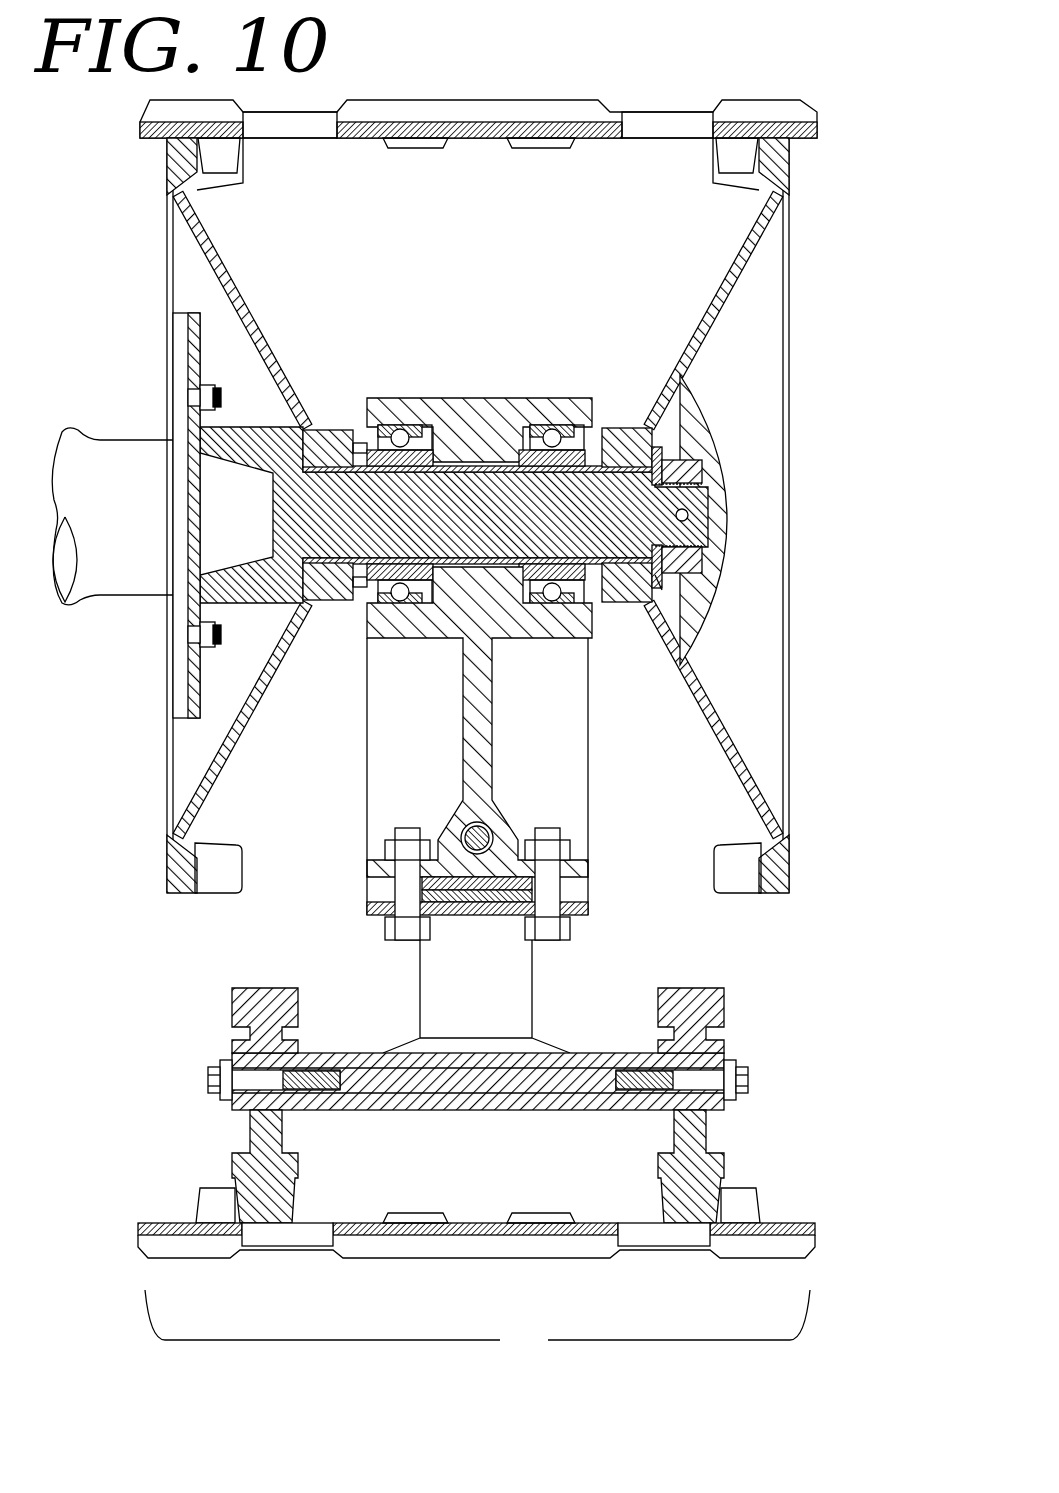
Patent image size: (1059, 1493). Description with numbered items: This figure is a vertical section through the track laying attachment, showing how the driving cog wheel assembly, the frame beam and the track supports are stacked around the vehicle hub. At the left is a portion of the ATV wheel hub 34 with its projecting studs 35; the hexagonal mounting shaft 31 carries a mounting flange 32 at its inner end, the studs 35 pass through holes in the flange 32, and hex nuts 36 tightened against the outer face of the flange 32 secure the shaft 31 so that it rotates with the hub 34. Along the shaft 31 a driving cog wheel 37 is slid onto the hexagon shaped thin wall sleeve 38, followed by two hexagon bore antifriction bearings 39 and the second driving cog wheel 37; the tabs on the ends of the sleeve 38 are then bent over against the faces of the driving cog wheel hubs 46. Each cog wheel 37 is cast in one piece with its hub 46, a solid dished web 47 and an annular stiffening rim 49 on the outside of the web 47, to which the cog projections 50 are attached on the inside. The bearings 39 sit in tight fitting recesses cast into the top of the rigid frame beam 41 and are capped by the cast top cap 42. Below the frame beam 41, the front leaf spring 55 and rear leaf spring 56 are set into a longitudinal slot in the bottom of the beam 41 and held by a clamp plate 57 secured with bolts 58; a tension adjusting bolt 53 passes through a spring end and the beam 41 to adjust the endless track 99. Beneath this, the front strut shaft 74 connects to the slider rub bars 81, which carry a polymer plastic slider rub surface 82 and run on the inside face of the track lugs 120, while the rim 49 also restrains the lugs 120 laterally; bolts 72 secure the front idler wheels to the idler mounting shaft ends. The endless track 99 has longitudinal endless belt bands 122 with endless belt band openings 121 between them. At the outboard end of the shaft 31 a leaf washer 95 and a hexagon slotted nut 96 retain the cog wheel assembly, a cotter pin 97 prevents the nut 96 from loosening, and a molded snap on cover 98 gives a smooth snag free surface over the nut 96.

The mounting shaft 31 is at (308, 488).
The mounting flange 32 is at (186, 340).
The wheel hub 34 is at (130, 566).
The projecting studs 35 is at (222, 393).
The hex nuts 36 is at (208, 380).
The driving cog wheel 37 is at (170, 245).
The thin wall sleeve 38 is at (619, 582).
The hexagon bore antifriction bearing 39 is at (552, 428).
The rigid frame beam 41 is at (366, 766).
The top cap 42 is at (470, 398).
The driving cog wheel hub 46 is at (625, 422).
The solid dished web 47 is at (732, 293).
The annular stiffening rim 49 is at (782, 153).
The cog projections 50 is at (760, 166).
The tension adjusting bolt 53 is at (487, 832).
The front leaf spring 55 is at (527, 884).
The rear leaf spring 56 is at (528, 893).
The clamp plate 57 is at (530, 904).
The bolts 58 is at (386, 928).
The bolts 72 is at (210, 1075).
The front strut shaft 74 is at (487, 1112).
The slider rub bar 81 is at (233, 998).
The polymer plastic slider rub surface 82 is at (233, 1172).
The leaf washer 95 is at (660, 450).
The hexagon slotted nut 96 is at (664, 562).
The cotter pin 97 is at (690, 518).
The molded snap on cover 98 is at (682, 572).
The endless track 99 is at (476, 1286).
The lugs 120 is at (742, 158).
The endless belt band openings 121 is at (290, 1242).
The endless belt bands 122 is at (176, 1252).